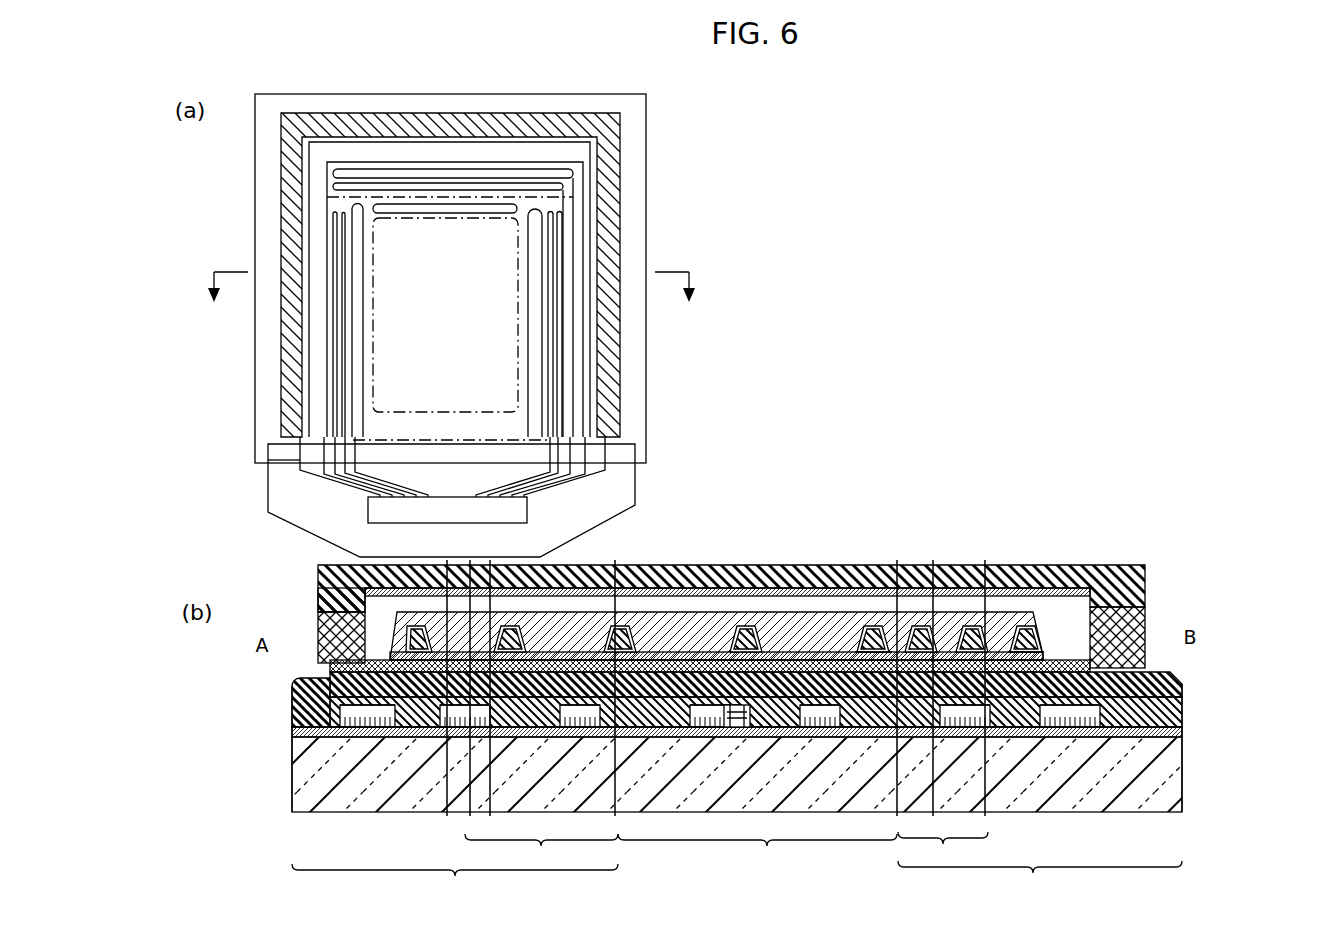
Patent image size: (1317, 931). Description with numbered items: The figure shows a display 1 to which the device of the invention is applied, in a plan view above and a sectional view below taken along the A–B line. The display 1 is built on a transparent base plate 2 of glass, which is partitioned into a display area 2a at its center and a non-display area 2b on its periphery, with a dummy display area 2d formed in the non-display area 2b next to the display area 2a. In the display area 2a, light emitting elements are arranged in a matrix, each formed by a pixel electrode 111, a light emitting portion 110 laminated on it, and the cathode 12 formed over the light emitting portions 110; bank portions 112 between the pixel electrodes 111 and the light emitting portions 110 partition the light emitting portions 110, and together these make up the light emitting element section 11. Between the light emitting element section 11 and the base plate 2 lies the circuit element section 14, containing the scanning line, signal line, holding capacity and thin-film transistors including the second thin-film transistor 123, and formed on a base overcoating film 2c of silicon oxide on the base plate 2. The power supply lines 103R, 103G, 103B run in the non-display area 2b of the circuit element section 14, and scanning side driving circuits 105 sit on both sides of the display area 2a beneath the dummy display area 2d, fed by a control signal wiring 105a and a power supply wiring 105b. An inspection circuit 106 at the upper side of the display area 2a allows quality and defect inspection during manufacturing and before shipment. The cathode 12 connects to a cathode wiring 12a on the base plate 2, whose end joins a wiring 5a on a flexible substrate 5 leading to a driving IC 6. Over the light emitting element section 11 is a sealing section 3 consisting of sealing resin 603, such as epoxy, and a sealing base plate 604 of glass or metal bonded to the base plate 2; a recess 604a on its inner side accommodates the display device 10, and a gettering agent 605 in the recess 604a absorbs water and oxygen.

The display 1 is at (244, 239).
The base plate 2 is at (640, 370).
The display area 2a is at (520, 262).
The non-display area 2b is at (737, 882).
The base overcoating film 2c is at (1183, 733).
The dummy display area 2d is at (726, 853).
The sealing section 3 is at (1204, 510).
The flexible substrate 5 is at (620, 496).
The wiring 5a is at (322, 478).
The driving IC 6 is at (378, 510).
The display device 10 is at (1043, 616).
The light emitting element section 11 is at (875, 616).
The cathode 12 is at (832, 626).
The cathode wiring 12a is at (281, 184).
The circuit element section 14 is at (1190, 672).
The power supply line 103R is at (580, 152).
The power supply line 103B is at (557, 172).
The power supply line 103G is at (548, 186).
The scanning side driving circuit 105 is at (352, 449).
The control signal wiring for driving circuit 105a is at (334, 338).
The power supply wiring for driving circuit 105b is at (343, 370).
The inspection circuit 106 is at (536, 216).
The light emitting portion 110 is at (713, 640).
The pixel electrode 111 is at (668, 656).
The bank portion 112 is at (748, 626).
The second thin-film transistor 123 is at (737, 748).
The sealing resin 603 is at (318, 636).
The sealing base plate 604 is at (1130, 552).
The recess 604a is at (345, 600).
The gettering agent 605 is at (590, 566).